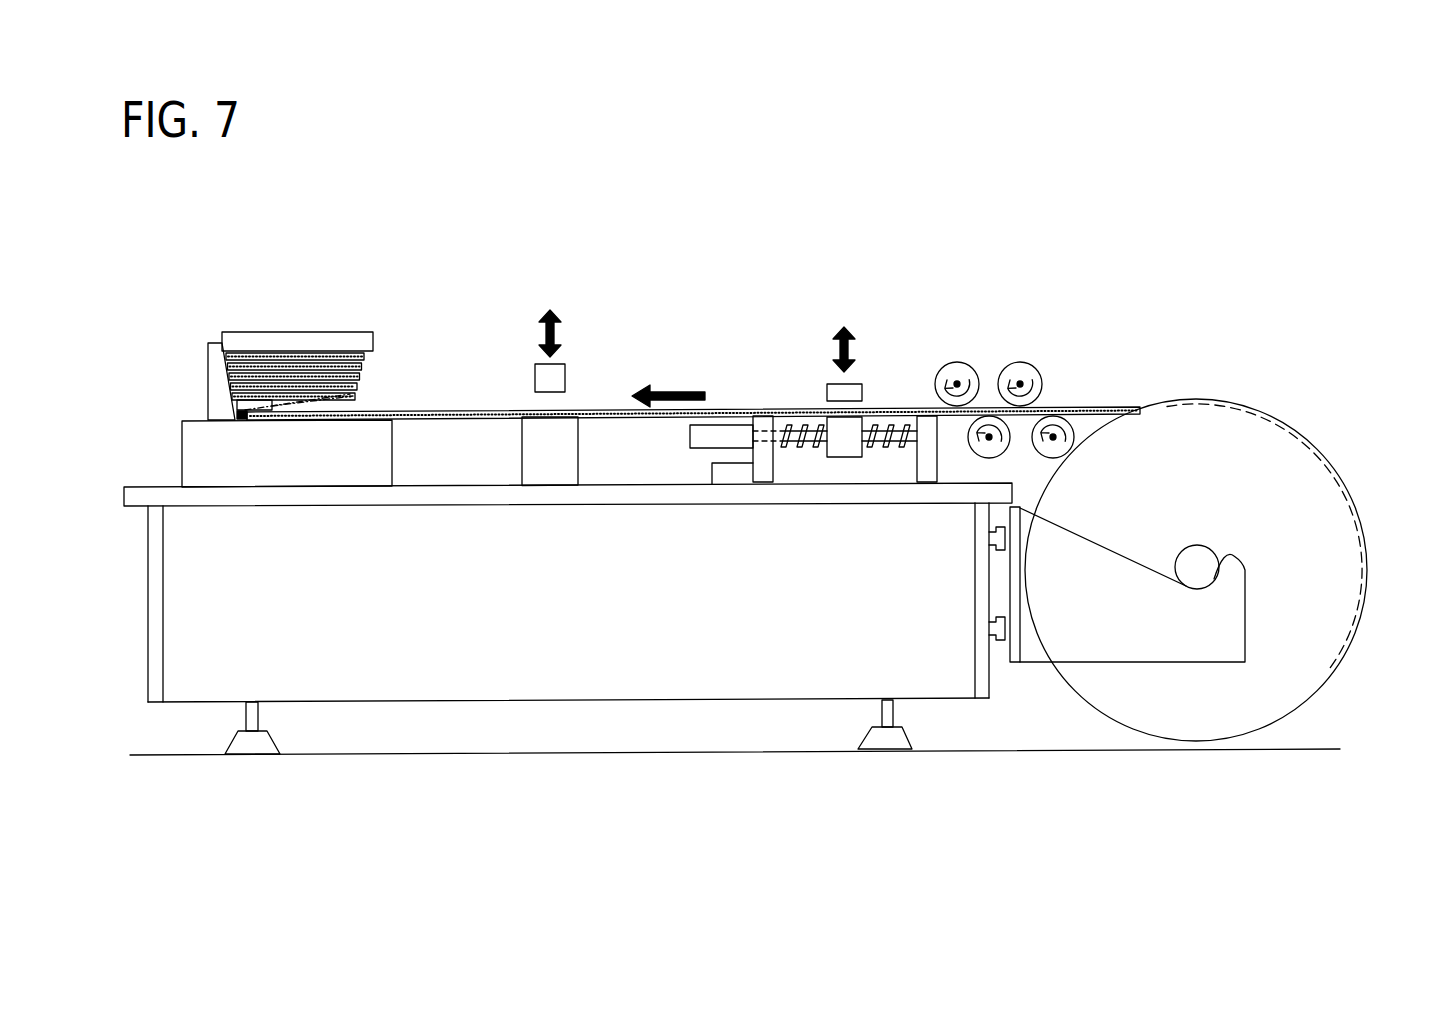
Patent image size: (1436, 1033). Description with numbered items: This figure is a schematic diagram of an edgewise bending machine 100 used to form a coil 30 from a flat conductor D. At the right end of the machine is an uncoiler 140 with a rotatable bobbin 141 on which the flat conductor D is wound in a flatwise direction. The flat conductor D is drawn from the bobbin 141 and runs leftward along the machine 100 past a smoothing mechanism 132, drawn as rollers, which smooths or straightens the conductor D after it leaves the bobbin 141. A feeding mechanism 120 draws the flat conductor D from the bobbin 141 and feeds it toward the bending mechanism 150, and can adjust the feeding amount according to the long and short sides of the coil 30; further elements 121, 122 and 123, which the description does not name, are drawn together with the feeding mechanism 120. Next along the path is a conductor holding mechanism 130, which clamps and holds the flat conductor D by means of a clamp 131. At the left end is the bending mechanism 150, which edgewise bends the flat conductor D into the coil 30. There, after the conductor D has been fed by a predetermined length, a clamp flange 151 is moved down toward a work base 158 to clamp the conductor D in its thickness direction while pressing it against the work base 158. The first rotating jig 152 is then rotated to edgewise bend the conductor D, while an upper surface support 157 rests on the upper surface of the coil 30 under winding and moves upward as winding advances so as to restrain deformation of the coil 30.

The edgewise bending machine 100 is at (398, 655).
The feeding mechanism 120 is at (813, 382).
The pressing member 121 is at (835, 390).
The drive motor 122 is at (729, 432).
The feed screw 123 is at (880, 420).
The conductor holding mechanism 130 is at (571, 330).
The clamp 131 is at (537, 364).
The smoothing mechanism 132 is at (955, 366).
The uncoiler 140 is at (1205, 547).
The bobbin 141 is at (1343, 594).
The bending mechanism 150 is at (266, 330).
The clamp flange 151 is at (232, 403).
The first rotating jig 152 is at (212, 343).
The upper surface support 157 is at (279, 340).
The work base 158 is at (190, 429).
The coil 30 is at (358, 377).
The flat conductor D is at (1099, 406).